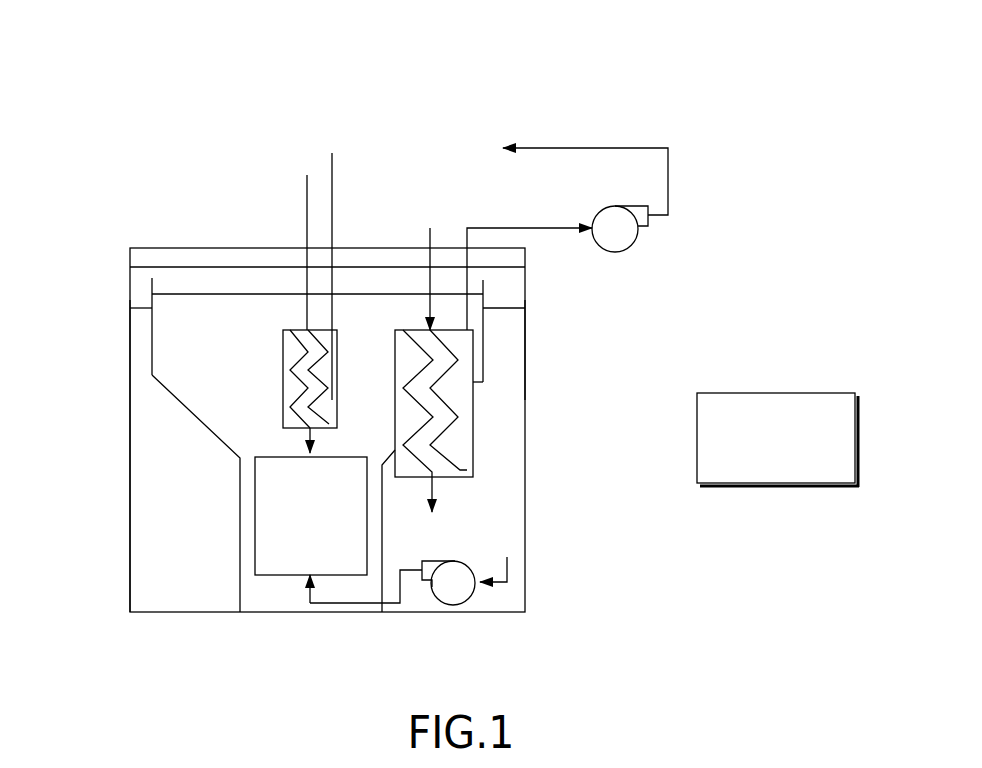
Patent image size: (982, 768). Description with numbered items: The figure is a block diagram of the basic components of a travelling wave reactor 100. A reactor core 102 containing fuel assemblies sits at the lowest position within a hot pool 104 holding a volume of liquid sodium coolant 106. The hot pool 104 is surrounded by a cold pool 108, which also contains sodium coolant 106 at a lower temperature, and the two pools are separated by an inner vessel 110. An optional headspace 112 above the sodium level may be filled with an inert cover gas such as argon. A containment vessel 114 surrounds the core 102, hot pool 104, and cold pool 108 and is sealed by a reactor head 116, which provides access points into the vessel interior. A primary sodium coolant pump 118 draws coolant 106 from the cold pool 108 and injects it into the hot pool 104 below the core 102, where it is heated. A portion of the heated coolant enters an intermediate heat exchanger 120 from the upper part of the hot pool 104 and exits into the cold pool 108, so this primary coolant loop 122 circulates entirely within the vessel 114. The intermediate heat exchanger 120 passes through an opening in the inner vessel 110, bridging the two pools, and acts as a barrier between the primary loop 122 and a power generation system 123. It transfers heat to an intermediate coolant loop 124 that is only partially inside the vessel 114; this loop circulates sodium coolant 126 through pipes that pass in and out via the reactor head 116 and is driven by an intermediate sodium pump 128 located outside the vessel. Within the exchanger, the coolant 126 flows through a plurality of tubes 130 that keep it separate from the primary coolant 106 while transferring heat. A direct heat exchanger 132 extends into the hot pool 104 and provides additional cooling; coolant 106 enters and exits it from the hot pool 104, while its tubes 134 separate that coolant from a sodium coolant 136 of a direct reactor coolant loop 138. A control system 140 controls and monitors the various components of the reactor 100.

The travelling wave reactor 100 is at (690, 98).
The reactor core 102 is at (275, 575).
The hot pool 104 is at (213, 332).
The liquid sodium coolant 106 is at (160, 323).
The cold pool 108 is at (140, 403).
The inner vessel 110 is at (225, 450).
The headspace 112 is at (183, 278).
The containment vessel 114 is at (130, 573).
The reactor head 116 is at (230, 248).
The primary sodium coolant pump 118 is at (470, 600).
The intermediate heat exchanger 120 is at (475, 437).
The primary coolant loop 122 is at (556, 527).
The power generation system 123 is at (503, 118).
The intermediate coolant loop 124 is at (682, 230).
The sodium coolant 126 is at (430, 240).
The intermediate sodium pump 128 is at (633, 245).
The tubes 130 is at (452, 403).
The direct heat exchanger 132 is at (283, 365).
The tubes 134 is at (332, 400).
The sodium coolant 136 is at (307, 185).
The direct reactor coolant loop 138 is at (312, 157).
The control system 140 is at (765, 393).